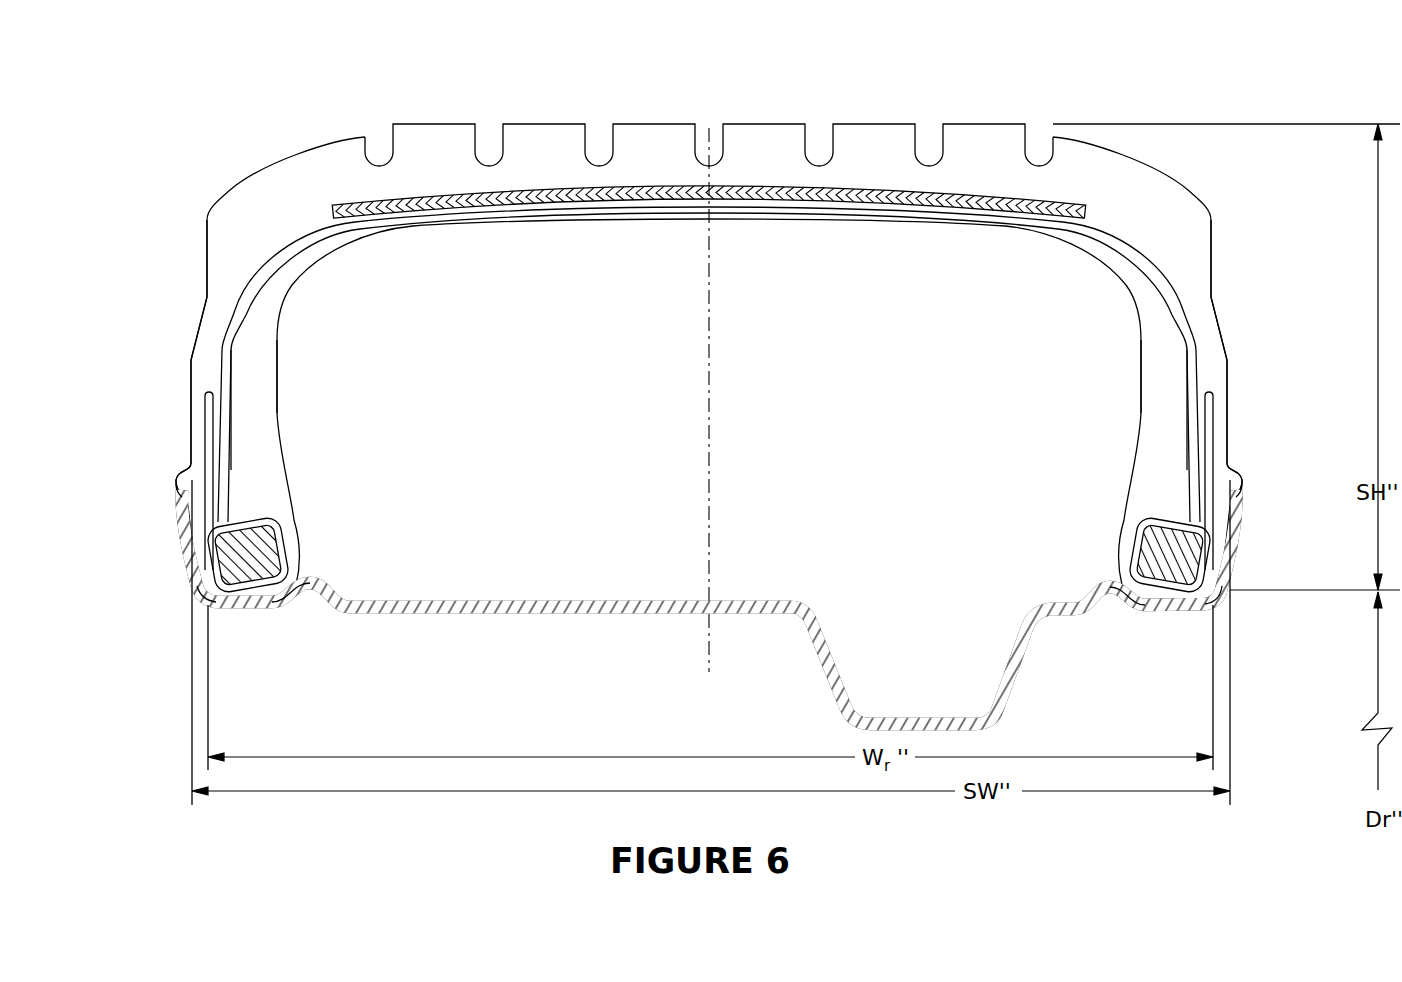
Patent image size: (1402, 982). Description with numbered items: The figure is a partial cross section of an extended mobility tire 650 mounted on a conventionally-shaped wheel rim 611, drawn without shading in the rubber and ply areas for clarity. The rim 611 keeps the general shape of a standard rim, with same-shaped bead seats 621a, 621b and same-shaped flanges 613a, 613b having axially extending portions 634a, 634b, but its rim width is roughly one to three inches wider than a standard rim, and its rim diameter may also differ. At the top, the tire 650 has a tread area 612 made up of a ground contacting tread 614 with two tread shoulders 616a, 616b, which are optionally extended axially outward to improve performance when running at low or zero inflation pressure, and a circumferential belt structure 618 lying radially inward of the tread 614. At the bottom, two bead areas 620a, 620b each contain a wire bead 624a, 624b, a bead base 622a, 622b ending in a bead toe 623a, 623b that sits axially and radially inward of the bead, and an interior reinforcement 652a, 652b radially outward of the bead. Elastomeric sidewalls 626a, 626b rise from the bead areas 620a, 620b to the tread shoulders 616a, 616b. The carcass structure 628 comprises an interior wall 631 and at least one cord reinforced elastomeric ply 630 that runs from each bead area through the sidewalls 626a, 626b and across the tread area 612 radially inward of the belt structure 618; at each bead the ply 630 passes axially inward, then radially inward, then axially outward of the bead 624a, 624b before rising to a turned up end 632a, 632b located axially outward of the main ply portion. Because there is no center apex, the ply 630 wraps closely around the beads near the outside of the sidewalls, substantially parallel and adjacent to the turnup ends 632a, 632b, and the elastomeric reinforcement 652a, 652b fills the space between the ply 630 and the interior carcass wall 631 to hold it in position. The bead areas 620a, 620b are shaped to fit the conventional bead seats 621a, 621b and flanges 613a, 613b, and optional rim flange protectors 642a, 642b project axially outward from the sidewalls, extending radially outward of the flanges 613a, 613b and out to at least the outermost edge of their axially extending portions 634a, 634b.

The wheel rim 611 is at (562, 602).
The tread area 612 is at (753, 119).
The rim flange 613a is at (190, 548).
The rim flange 613b is at (1232, 548).
The ground contacting tread 614 is at (955, 124).
The tread shoulder 616a is at (207, 257).
The tread shoulder 616b is at (1211, 262).
The circumferential belt structure 618 is at (640, 200).
The bead area 620a is at (351, 507).
The bead area 620b is at (1069, 506).
The bead seat 621a is at (247, 615).
The bead seat 621b is at (1172, 616).
The bead base 622a is at (232, 592).
The bead base 622b is at (1195, 594).
The bead toe 623a is at (272, 597).
The bead toe 623b is at (1143, 598).
The wire bead 624a is at (247, 545).
The wire bead 624b is at (1173, 545).
The sidewall 626a is at (191, 362).
The sidewall 626b is at (1228, 372).
The carcass structure 628 is at (288, 320).
The cord reinforced elastomeric ply 630 is at (225, 378).
The interior wall 631 is at (277, 415).
The turned up end 632a is at (191, 387).
The turned up end 632b is at (1228, 390).
The axially extending portion 634a is at (173, 490).
The axially extending portion 634b is at (1234, 500).
The rim flange protector 642a is at (180, 478).
The rim flange protector 642b is at (1236, 480).
The tire 650 is at (1257, 221).
The interior reinforcement 652a is at (265, 472).
The interior reinforcement 652b is at (1173, 478).